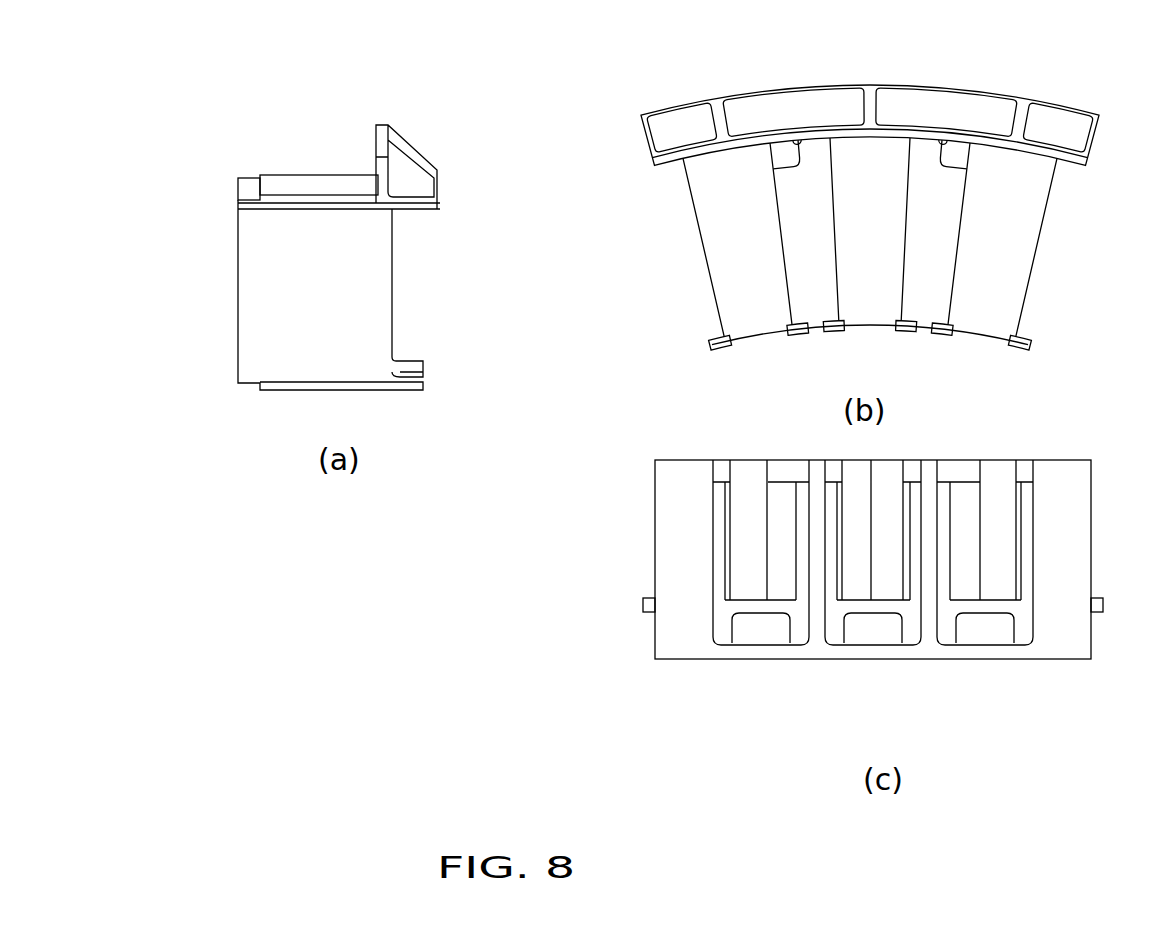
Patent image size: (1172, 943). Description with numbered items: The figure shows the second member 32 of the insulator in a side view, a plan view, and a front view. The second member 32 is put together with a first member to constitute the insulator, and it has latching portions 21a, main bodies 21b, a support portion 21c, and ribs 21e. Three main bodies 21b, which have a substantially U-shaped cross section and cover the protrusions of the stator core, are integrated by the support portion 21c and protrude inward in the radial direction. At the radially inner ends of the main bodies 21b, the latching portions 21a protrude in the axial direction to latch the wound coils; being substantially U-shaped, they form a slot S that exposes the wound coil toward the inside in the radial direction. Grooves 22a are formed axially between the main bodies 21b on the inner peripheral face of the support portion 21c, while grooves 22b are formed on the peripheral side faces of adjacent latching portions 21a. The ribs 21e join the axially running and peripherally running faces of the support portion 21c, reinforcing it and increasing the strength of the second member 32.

The second member 32 is at (222, 127).
The support portion 21c is at (303, 187).
The rib 21e is at (407, 162).
The main body 21b is at (377, 270).
The latching portion 21a is at (423, 370).
The groove 22a is at (773, 169).
The groove 22b is at (712, 343).
The slot S is at (800, 630).